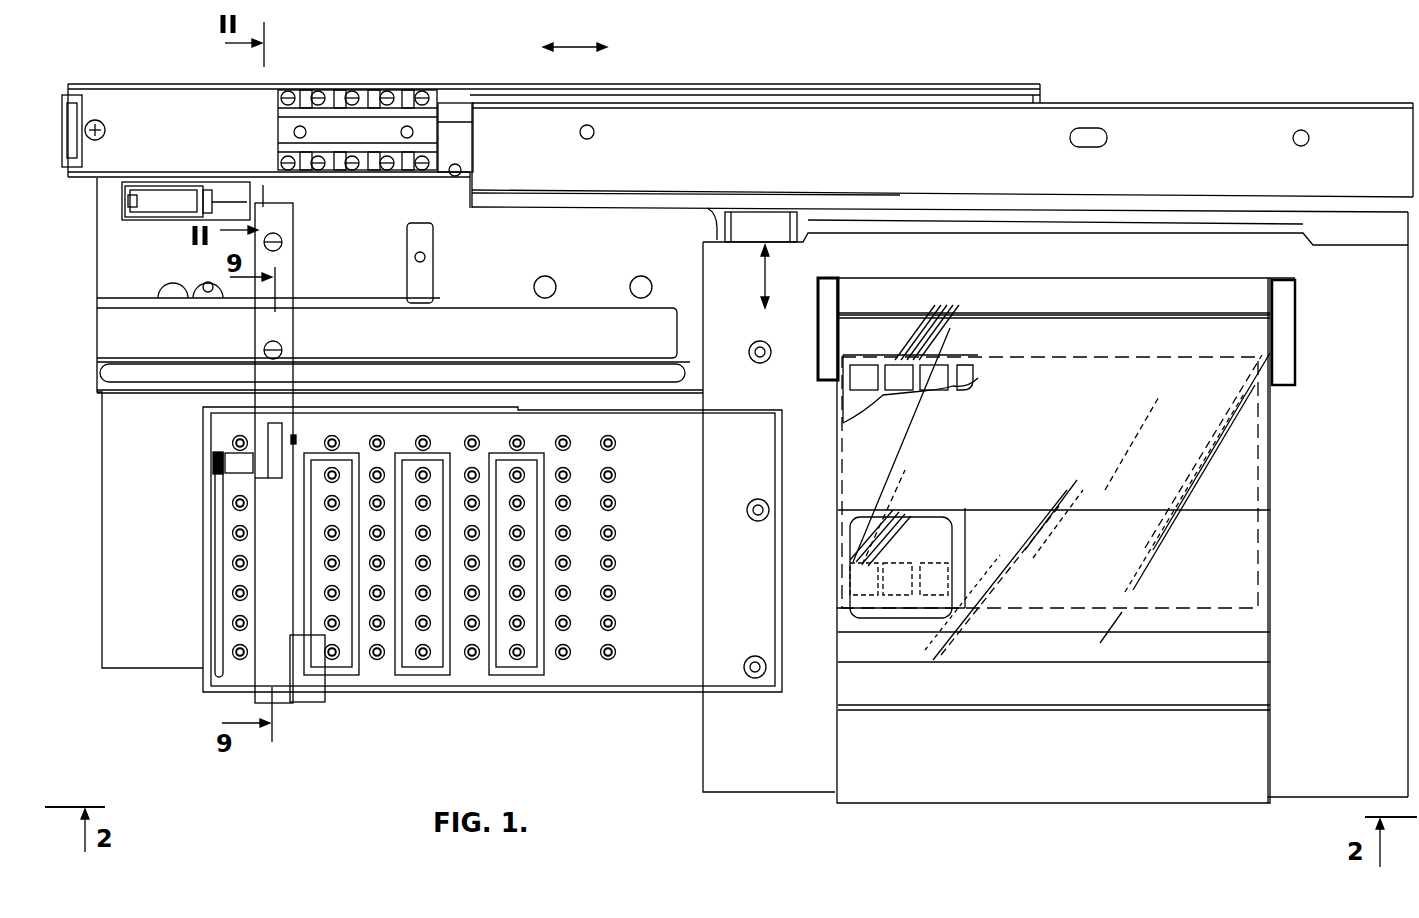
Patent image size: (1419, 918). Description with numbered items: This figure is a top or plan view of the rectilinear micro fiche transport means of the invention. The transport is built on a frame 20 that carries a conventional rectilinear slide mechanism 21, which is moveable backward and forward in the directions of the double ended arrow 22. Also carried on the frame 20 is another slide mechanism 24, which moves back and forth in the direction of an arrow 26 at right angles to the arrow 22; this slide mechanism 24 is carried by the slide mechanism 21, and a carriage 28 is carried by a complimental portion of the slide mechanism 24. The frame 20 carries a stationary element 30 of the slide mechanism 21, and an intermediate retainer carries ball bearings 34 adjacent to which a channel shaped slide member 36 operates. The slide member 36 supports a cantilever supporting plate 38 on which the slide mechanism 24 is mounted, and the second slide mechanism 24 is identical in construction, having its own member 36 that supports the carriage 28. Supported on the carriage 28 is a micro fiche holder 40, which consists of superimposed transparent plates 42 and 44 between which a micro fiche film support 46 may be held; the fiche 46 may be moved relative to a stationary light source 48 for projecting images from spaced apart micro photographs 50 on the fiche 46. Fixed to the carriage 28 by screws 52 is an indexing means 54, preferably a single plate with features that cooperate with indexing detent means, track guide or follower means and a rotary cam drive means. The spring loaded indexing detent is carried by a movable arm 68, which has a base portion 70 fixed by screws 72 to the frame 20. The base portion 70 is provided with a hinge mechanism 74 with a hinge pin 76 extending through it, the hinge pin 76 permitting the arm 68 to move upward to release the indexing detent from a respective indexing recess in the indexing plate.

The frame 20 is at (87, 239).
The rectilinear slide mechanism 21 is at (403, 103).
The double ended arrow 22 is at (593, 36).
The slide mechanism 24 is at (750, 220).
The arrow 26 is at (768, 273).
The carriage 28 is at (1027, 247).
The stationary element 30 is at (175, 82).
The ball bearings 34 is at (332, 97).
The channel shaped slide member 36 is at (457, 122).
The cantilever supporting plate 38 is at (845, 227).
The micro fiche holder 40 is at (1285, 425).
The transparent plate 42 is at (1237, 537).
The transparent plate 44 is at (1248, 495).
The micro fiche film support 46 is at (1163, 382).
The stationary light source 48 is at (903, 590).
The micro photographs 50 is at (904, 391).
The screws 52 is at (753, 522).
The indexing means 54 is at (583, 713).
The movable arm 68 is at (272, 592).
The base portion 70 is at (270, 318).
The screws 72 is at (277, 342).
The hinge mechanism 74 is at (295, 437).
The hinge pin 76 is at (298, 437).